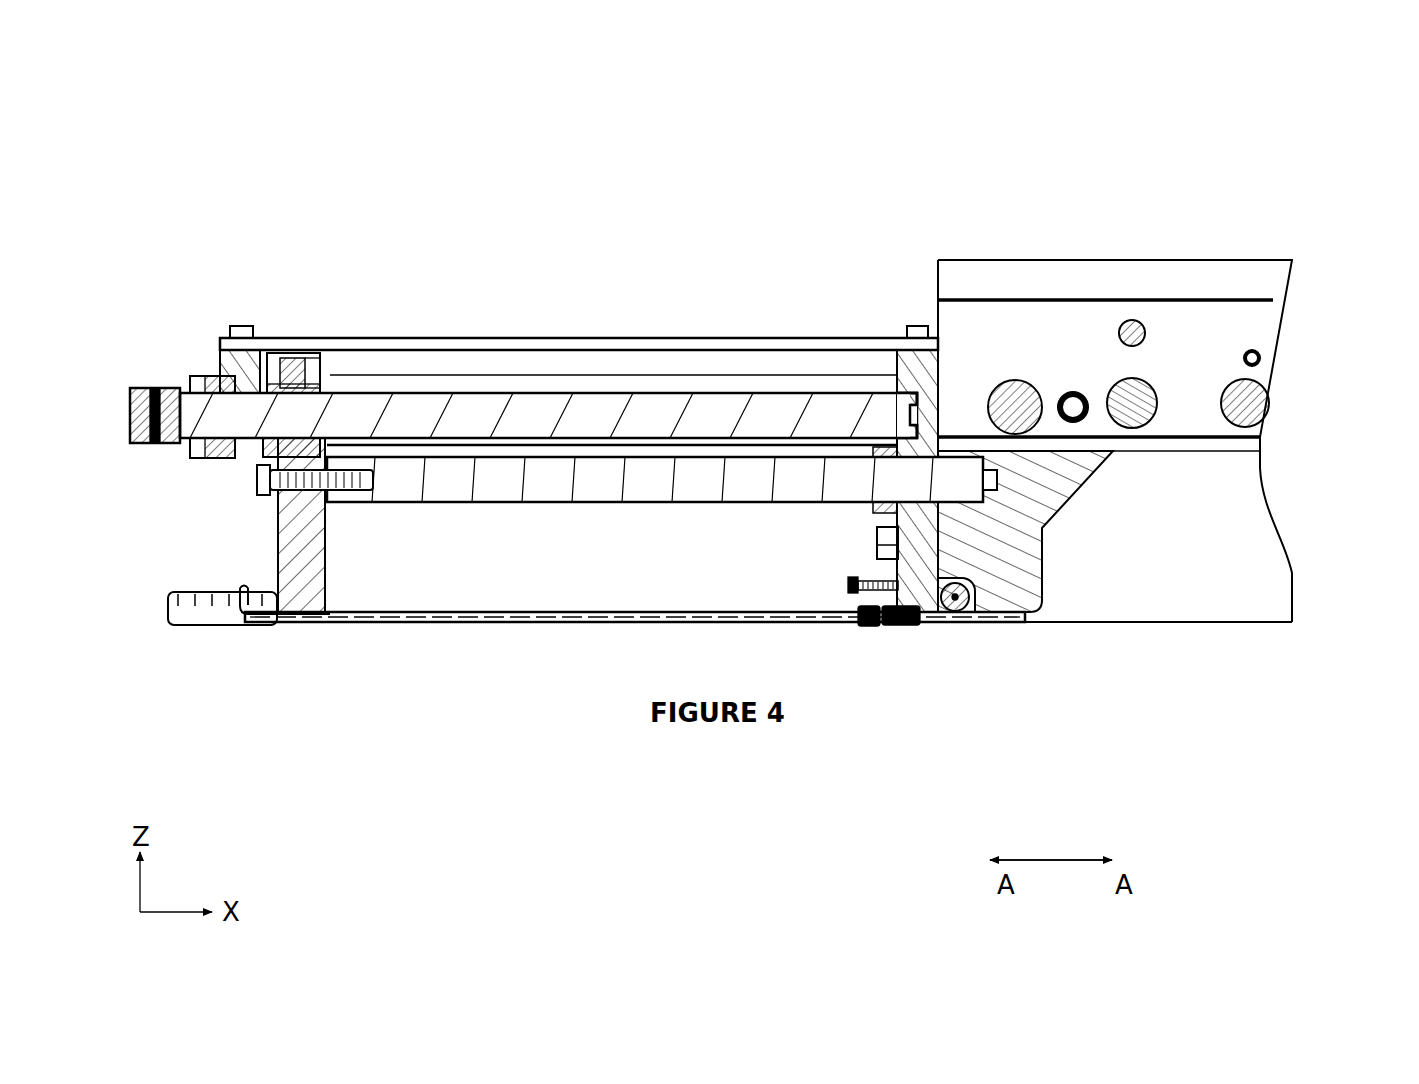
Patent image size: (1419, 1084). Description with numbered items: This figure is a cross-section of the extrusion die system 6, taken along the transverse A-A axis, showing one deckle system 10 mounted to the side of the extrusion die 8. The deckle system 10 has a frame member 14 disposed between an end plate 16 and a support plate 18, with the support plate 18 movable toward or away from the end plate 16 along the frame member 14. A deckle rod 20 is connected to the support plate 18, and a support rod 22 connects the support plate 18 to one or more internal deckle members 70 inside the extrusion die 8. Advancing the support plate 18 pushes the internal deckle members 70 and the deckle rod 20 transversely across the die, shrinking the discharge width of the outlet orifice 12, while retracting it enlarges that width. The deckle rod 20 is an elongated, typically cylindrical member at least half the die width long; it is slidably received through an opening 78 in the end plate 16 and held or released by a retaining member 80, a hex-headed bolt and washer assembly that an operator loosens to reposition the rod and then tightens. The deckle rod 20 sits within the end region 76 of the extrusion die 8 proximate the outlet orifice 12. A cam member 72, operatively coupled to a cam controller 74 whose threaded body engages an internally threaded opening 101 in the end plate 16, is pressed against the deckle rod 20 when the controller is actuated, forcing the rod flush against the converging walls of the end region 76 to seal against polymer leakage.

The extrusion die system 6 is at (700, 160).
The extrusion die 8 is at (990, 245).
The deckle system 10 is at (642, 305).
The outlet orifice 12 is at (1065, 622).
The frame member 14 is at (706, 338).
The end plate 16 is at (878, 527).
The support plate 18 is at (278, 528).
The deckle rod 20 is at (488, 624).
The support rod 22 is at (566, 467).
The internal deckle member 70 is at (1047, 483).
The cam member 72 is at (960, 620).
The cam controller 74 is at (846, 585).
The end region 76 is at (1300, 622).
The opening 78 is at (897, 625).
The retaining member 80 is at (865, 625).
The internally threaded opening 101 is at (929, 622).